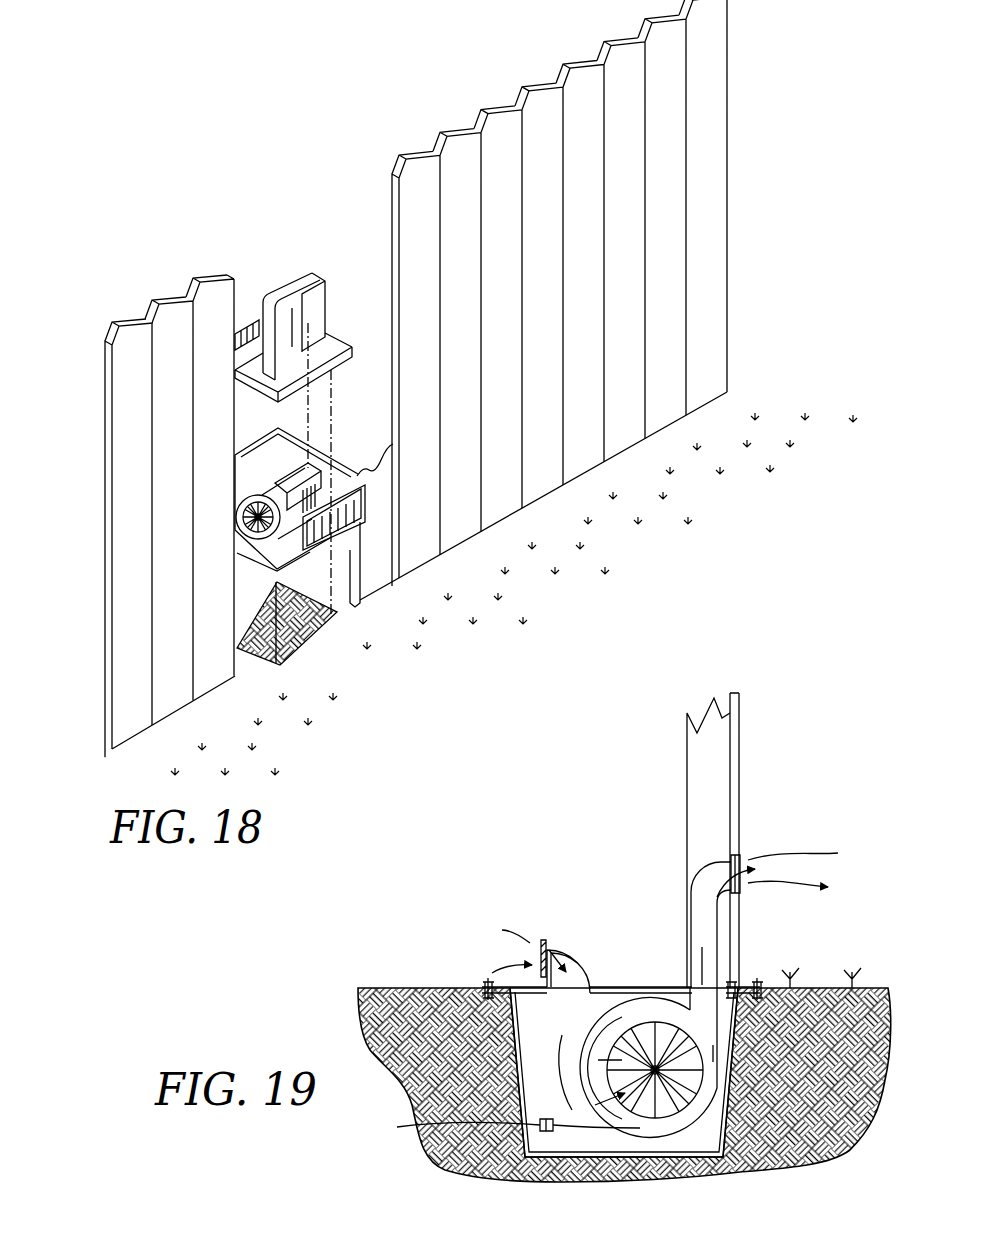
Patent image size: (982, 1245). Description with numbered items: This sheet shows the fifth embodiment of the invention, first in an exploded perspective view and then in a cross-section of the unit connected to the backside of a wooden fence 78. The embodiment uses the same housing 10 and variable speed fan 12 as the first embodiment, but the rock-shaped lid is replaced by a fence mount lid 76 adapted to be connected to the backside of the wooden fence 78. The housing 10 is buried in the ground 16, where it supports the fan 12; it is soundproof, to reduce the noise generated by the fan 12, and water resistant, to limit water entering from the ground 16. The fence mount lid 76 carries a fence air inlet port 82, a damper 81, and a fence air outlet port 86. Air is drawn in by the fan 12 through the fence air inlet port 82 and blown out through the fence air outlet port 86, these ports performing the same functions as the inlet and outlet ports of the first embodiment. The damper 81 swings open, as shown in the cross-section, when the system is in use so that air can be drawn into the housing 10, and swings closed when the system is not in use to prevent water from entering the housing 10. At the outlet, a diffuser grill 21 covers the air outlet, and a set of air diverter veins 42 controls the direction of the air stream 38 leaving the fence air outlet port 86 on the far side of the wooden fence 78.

In FIG. 19, the housing 10 is at (735, 1088).
In FIG. 18, the variable speed fan 12 is at (245, 552).
In FIG. 19, the variable speed fan 12 is at (678, 1140).
In FIG. 19, the ground 16 is at (890, 1000).
In FIG. 18, the diffuser grill 21 is at (368, 503).
In FIG. 19, the diffuser grill 21 is at (743, 893).
In FIG. 19, the air stream 38 is at (778, 860).
In FIG. 18, the air diverter veins 42 is at (348, 535).
In FIG. 18, the fence mount lid 76 is at (338, 348).
In FIG. 19, the fence mount lid 76 is at (648, 987).
In FIG. 18, the wooden fence 78 is at (733, 212).
In FIG. 19, the wooden fence 78 is at (739, 730).
In FIG. 19, the damper 81 is at (560, 955).
In FIG. 18, the fence air inlet port 82 is at (254, 333).
In FIG. 19, the fence air inlet port 82 is at (541, 940).
In FIG. 18, the fence air outlet port 86 is at (298, 277).
In FIG. 19, the fence air outlet port 86 is at (697, 875).